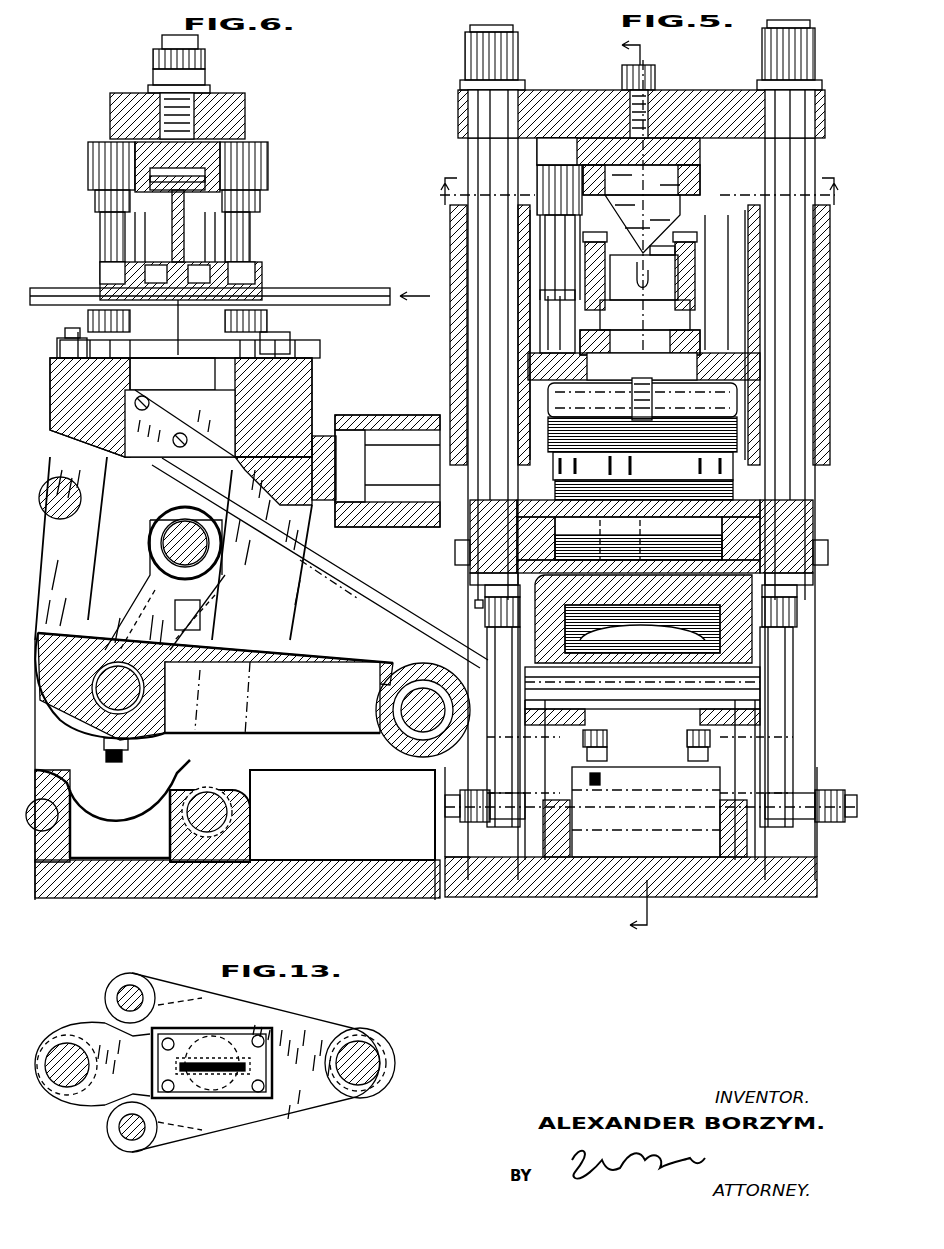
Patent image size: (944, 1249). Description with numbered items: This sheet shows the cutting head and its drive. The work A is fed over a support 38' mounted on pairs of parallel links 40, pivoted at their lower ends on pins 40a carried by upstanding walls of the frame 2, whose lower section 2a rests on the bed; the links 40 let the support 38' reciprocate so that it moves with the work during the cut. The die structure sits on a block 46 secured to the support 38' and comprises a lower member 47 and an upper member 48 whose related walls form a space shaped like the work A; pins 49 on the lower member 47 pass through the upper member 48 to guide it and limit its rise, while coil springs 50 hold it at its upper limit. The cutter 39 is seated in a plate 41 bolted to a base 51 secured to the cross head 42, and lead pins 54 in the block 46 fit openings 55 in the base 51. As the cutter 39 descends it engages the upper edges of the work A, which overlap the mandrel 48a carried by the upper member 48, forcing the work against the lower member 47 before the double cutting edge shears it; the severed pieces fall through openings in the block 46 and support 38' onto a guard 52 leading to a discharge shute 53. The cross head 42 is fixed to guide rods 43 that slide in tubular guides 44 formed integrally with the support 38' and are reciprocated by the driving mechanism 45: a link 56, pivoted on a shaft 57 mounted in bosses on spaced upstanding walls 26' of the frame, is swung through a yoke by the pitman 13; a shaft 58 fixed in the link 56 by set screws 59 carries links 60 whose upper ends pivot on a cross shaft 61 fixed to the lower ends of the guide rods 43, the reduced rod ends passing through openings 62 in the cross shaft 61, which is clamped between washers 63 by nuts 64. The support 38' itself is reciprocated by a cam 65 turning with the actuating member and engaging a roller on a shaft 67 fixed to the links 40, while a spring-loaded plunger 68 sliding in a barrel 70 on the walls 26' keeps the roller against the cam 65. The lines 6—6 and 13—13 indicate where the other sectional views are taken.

In FIG. 5, the frame 2 is at (631, 845).
In FIG. 5, the lower section of frame 2a is at (462, 882).
In FIG. 5, the lug 6 is at (622, 488).
In FIG. 5, the pitman 13 is at (637, 175).
In FIG. 5, the lower frame member 26' is at (459, 597).
In FIG. 6, the support 38' is at (288, 431).
In FIG. 5, the support 38' is at (644, 352).
In FIG. 6, the cutter 39 is at (172, 232).
In FIG. 5, the cutter 39 is at (660, 240).
In FIG. 13, the cutter 39 is at (203, 1071).
In FIG. 6, the parallel links 40 is at (78, 612).
In FIG. 5, the parallel links 40 is at (487, 745).
In FIG. 6, the pins 40a is at (72, 830).
In FIG. 5, the pins 40a is at (838, 830).
In FIG. 6, the plate 41 is at (165, 190).
In FIG. 5, the plate 41 is at (700, 180).
In FIG. 13, the plate 41 is at (188, 1093).
In FIG. 6, the cross head 42 is at (240, 110).
In FIG. 5, the cross head 42 is at (720, 100).
In FIG. 13, the cross head 42 is at (318, 1036).
In FIG. 5, the guide rods 43 is at (468, 175).
In FIG. 13, the guide rods 43 is at (382, 1063).
In FIG. 5, the guides 44 is at (452, 352).
In FIG. 6, the driving mechanism 45 is at (246, 622).
In FIG. 6, the block 46 is at (60, 345).
In FIG. 5, the block 46 is at (700, 318).
In FIG. 6, the lower die member 47 is at (165, 362).
In FIG. 5, the lower die member 47 is at (695, 295).
In FIG. 5, the upper die member 48 is at (690, 268).
In FIG. 6, the mandrel 48a is at (245, 290).
In FIG. 5, the mandrel 48a is at (672, 240).
In FIG. 5, the guide pins 49 is at (595, 242).
In FIG. 5, the coil springs 50 is at (557, 321).
In FIG. 6, the base 51 is at (248, 152).
In FIG. 5, the base 51 is at (700, 155).
In FIG. 6, the guard 52 is at (178, 420).
In FIG. 5, the guard 52 is at (665, 400).
In FIG. 6, the discharge shute 53 is at (350, 600).
In FIG. 5, the discharge shute 53 is at (642, 458).
In FIG. 6, the lead pins 54 is at (100, 240).
In FIG. 5, the lead pins 54 is at (575, 235).
In FIG. 13, the lead pins 54 is at (118, 997).
In FIG. 6, the openings 55 is at (268, 180).
In FIG. 6, the link 56 is at (300, 730).
In FIG. 6, the pin or shaft 57 is at (390, 752).
In FIG. 6, the shaft 58 is at (100, 735).
In FIG. 5, the shaft 58 is at (603, 745).
In FIG. 6, the set screws 59 is at (114, 762).
In FIG. 5, the set screws 59 is at (594, 787).
In FIG. 6, the links 60 is at (150, 585).
In FIG. 5, the links 60 is at (530, 630).
In FIG. 6, the cross shaft 61 is at (160, 543).
In FIG. 5, the cross shaft 61 is at (690, 535).
In FIG. 5, the openings 62 is at (740, 540).
In FIG. 5, the washers 63 is at (468, 545).
In FIG. 5, the nuts 64 is at (485, 612).
In FIG. 5, the cam 65 is at (470, 578).
In FIG. 6, the shaft 67 is at (50, 485).
In FIG. 6, the plunger 68 is at (325, 445).
In FIG. 6, the barrel 70 is at (395, 420).
In FIG. 6, the work A is at (350, 290).